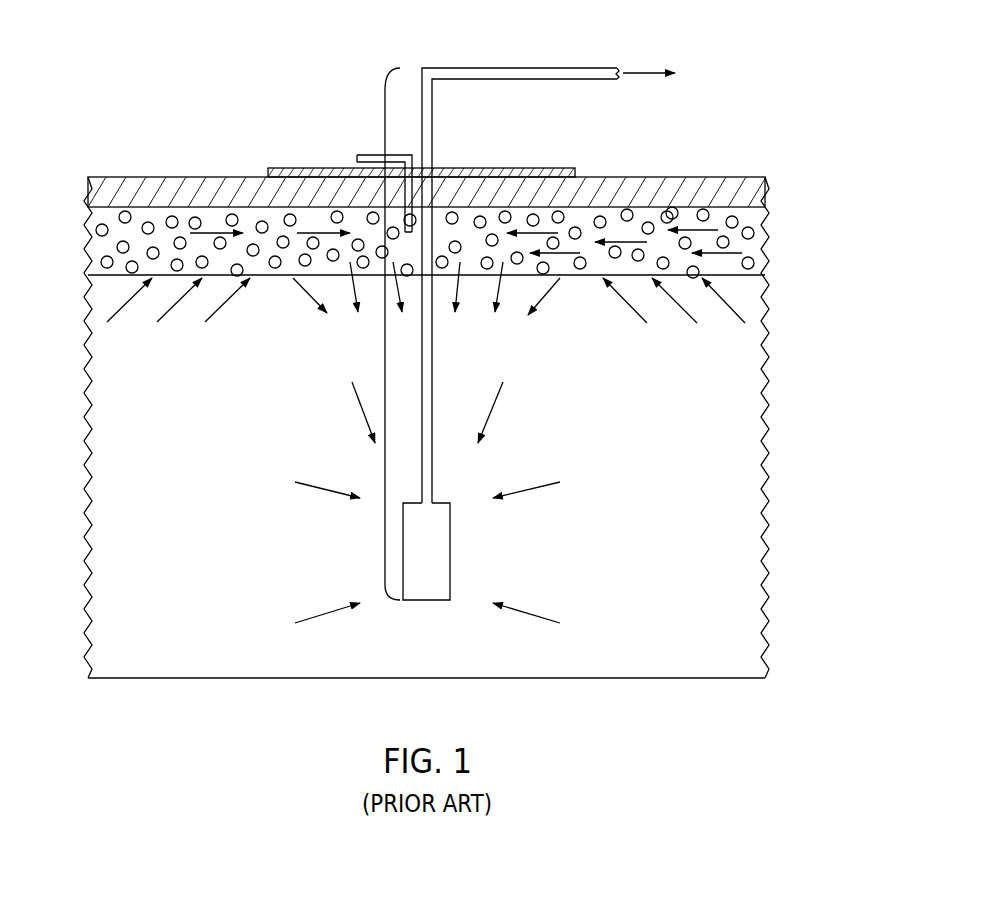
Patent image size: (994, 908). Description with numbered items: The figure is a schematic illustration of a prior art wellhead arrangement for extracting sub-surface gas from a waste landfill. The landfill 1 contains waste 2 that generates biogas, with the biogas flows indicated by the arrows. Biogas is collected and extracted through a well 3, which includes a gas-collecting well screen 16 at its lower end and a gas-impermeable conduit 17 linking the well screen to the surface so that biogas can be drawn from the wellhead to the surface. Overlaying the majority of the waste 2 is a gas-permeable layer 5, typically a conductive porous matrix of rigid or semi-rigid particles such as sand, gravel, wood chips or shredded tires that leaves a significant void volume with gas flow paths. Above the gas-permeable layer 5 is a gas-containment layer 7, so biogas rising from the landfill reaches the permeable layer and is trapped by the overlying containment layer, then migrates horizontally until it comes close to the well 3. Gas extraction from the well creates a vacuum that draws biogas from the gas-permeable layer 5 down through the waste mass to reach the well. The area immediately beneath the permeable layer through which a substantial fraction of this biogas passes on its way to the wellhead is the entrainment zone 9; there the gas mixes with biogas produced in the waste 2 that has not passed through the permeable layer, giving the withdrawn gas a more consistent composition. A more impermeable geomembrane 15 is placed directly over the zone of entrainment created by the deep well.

The landfill 1 is at (772, 226).
The waste 2 is at (219, 462).
The well 3 is at (385, 338).
The gas-permeable layer 5 is at (122, 268).
The gas-containment layer 7 is at (648, 187).
The entrainment zone 9 is at (302, 318).
The geomembrane 15 is at (496, 177).
The gas-collecting well screen 16 is at (450, 540).
The gas-impermeable conduit 17 is at (527, 68).